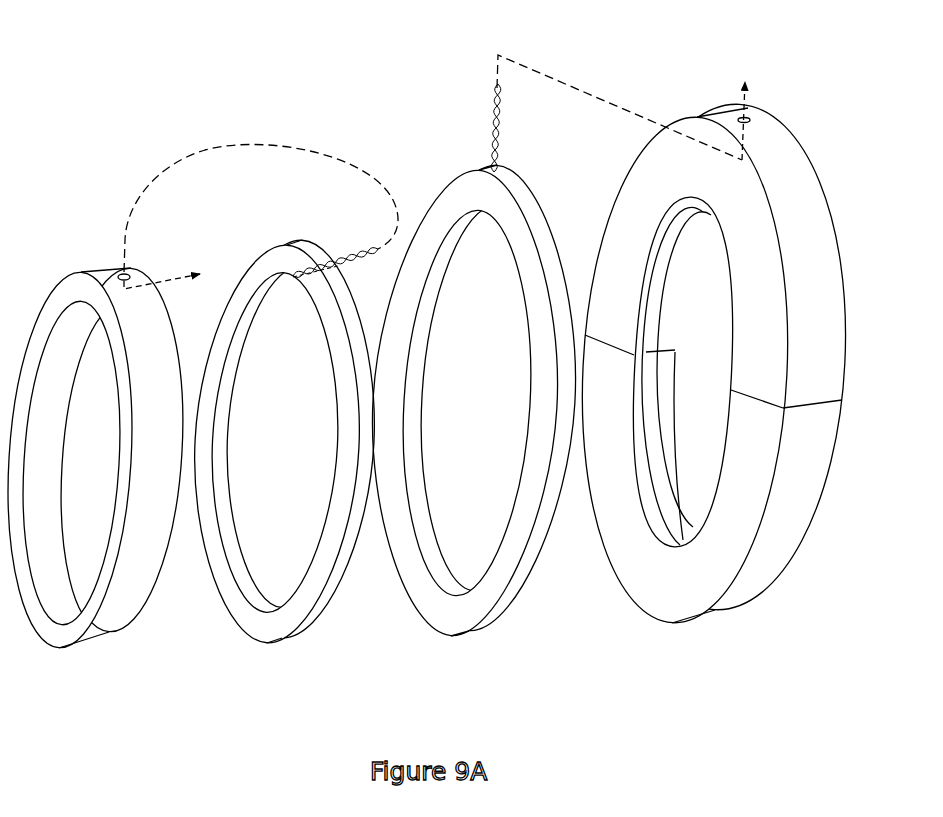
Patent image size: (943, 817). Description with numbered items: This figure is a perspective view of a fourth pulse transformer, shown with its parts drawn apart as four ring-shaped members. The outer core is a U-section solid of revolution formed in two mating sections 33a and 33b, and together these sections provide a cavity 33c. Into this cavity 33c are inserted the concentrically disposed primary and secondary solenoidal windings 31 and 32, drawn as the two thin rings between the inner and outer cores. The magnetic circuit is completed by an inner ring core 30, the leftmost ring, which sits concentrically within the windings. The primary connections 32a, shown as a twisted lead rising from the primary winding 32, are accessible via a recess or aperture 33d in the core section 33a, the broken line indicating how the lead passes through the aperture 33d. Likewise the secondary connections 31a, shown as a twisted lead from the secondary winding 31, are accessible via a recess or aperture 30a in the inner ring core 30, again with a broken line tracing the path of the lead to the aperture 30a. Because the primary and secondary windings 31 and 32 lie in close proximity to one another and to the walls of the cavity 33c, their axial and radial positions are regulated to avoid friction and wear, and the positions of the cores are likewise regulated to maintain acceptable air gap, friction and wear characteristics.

The inner ring core 30 is at (113, 510).
The recess or aperture 30a is at (113, 272).
The secondary solenoidal winding 31 is at (333, 473).
The secondary connections 31a is at (355, 250).
The primary solenoidal winding 32 is at (525, 452).
The primary connections 32a is at (497, 100).
The core section 33a is at (755, 363).
The core section 33b is at (745, 422).
The cavity 33c is at (661, 488).
The recess or aperture 33d is at (757, 118).